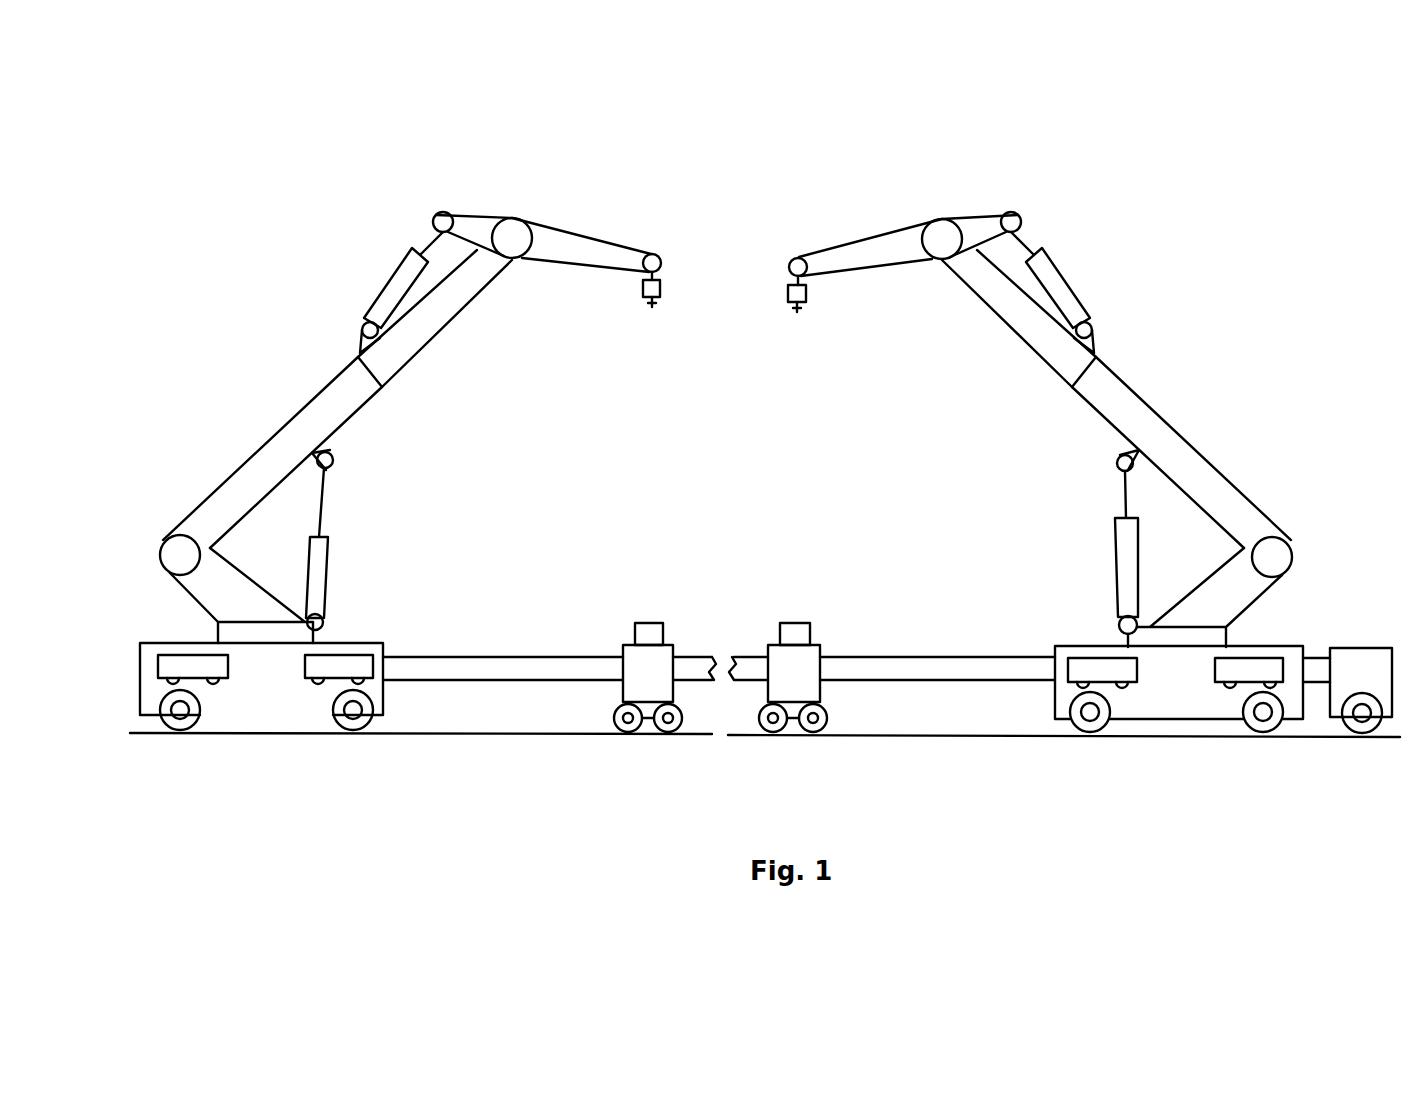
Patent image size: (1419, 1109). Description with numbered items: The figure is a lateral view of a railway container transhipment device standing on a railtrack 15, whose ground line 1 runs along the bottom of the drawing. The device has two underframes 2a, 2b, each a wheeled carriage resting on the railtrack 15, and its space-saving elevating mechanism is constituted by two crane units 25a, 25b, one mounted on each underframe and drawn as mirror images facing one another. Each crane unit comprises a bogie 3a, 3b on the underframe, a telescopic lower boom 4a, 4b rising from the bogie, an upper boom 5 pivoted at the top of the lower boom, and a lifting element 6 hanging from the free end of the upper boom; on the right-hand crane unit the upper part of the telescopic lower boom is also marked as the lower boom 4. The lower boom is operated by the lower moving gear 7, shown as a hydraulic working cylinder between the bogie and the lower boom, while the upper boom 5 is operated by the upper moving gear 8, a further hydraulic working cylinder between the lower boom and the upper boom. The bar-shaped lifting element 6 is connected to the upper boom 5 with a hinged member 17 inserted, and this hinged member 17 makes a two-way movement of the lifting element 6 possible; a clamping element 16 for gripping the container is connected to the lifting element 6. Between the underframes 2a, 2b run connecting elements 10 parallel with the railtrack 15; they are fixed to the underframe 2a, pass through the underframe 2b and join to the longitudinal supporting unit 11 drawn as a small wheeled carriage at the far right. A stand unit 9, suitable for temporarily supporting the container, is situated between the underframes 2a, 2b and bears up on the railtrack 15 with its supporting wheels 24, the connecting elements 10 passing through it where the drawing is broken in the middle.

The ground / travel path 1 is at (170, 735).
The underframe 2a is at (350, 652).
The underframe 2b is at (1085, 654).
The bogie 3a is at (228, 630).
The bogie 3b is at (1220, 635).
The telescopic lower boom 4 is at (1003, 325).
The telescopic lower boom 4a is at (233, 492).
The telescopic lower boom 4b is at (1176, 452).
The upper boom 5 is at (565, 241).
The lifting element 6 is at (642, 288).
The lower moving gear 7 is at (320, 555).
The upper moving gear 8 is at (407, 266).
The stand unit 9 is at (728, 672).
The connecting elements 10 is at (695, 665).
The longitudinal supporting unit 11 is at (1347, 662).
The railtrack 15 is at (968, 738).
The clamping element 16 is at (650, 307).
The hinged member 17 is at (660, 267).
The supporting wheels 24 is at (773, 732).
The crane unit 25a is at (327, 446).
The crane unit 25b is at (1122, 448).